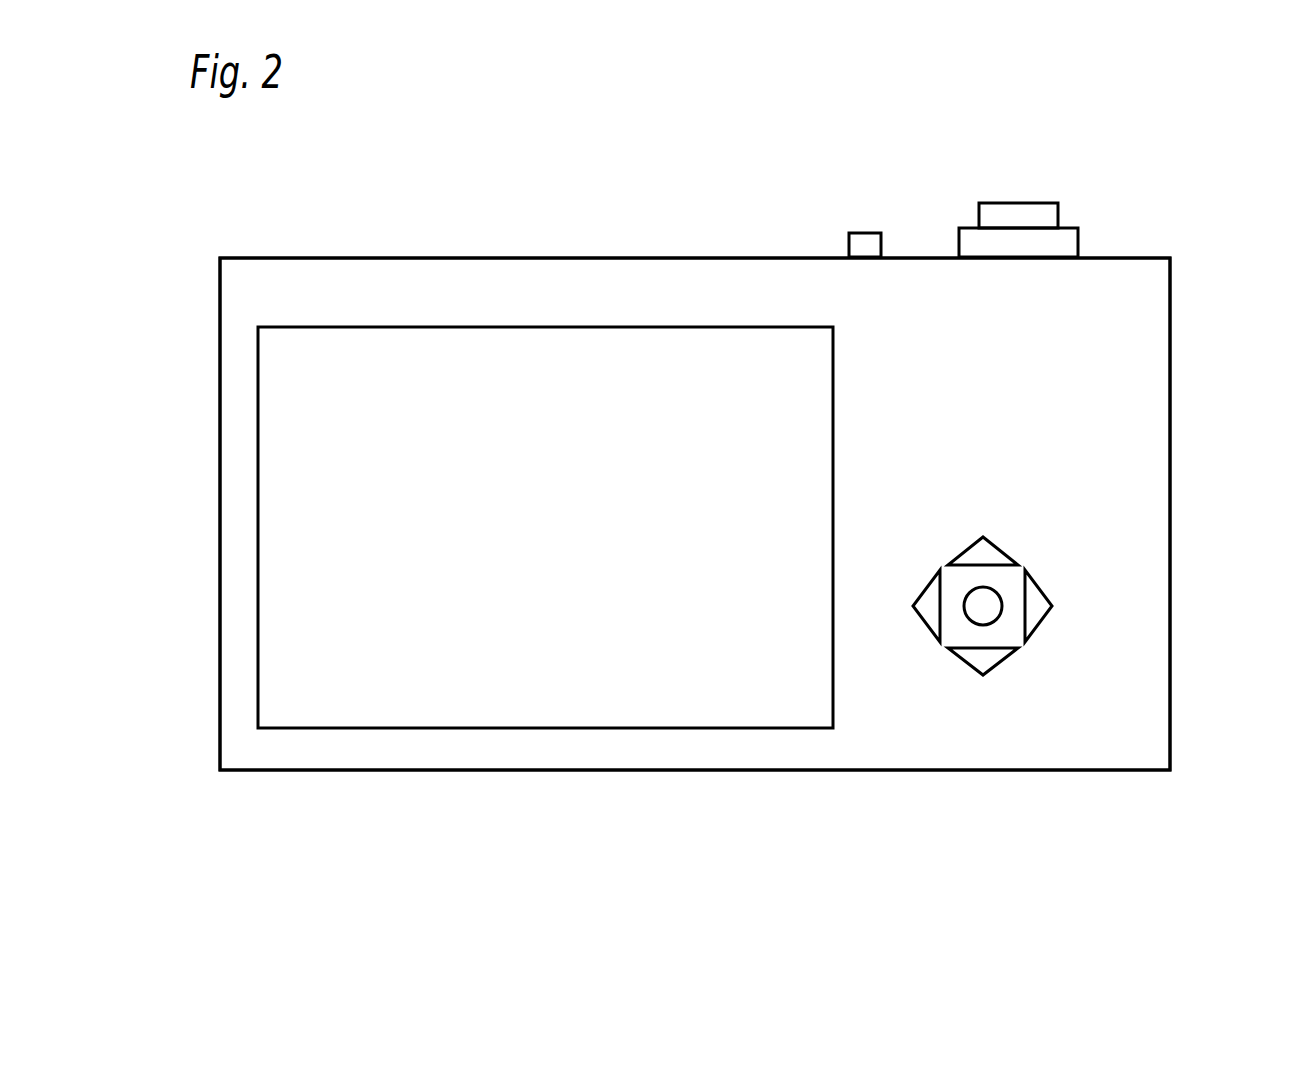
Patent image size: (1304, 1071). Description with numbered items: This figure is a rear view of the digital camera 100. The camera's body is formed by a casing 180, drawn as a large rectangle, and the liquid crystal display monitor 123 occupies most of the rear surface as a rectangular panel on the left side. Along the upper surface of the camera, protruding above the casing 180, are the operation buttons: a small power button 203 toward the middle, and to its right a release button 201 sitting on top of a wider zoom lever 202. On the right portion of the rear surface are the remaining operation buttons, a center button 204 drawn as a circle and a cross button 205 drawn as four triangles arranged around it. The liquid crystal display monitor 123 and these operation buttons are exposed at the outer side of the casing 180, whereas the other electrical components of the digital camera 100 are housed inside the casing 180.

The digital camera 100 is at (281, 182).
The casing 180 is at (440, 287).
The liquid crystal display monitor 123 is at (442, 698).
The power button 203 is at (850, 232).
The zoom lever 202 is at (1065, 245).
The release button 201 is at (1045, 212).
The center button 204 is at (985, 610).
The cross button 205 is at (983, 659).